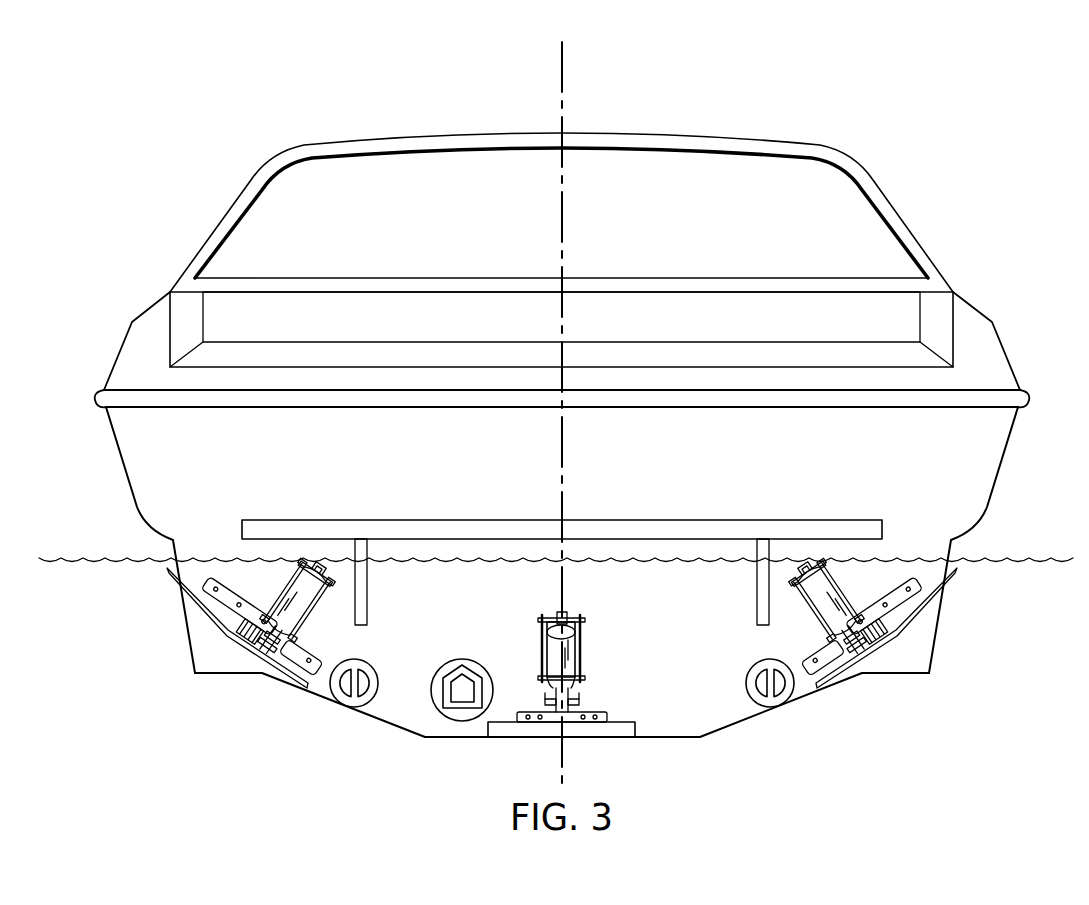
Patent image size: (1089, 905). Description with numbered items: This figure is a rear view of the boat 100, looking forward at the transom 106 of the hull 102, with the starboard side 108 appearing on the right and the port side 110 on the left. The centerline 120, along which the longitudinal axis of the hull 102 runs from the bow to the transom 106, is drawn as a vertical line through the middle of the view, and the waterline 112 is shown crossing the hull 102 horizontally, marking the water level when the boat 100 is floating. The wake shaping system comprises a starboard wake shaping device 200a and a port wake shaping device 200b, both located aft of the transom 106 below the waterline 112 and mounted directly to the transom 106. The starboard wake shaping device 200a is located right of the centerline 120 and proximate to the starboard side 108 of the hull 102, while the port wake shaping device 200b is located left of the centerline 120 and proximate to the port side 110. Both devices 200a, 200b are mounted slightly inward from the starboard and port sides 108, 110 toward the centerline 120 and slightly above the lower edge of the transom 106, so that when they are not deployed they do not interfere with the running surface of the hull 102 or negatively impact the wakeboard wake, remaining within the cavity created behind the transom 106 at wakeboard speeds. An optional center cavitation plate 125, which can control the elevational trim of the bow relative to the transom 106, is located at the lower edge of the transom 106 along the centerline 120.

The boat 100 is at (272, 80).
The hull 102 is at (668, 703).
The transom 106 is at (497, 432).
The starboard side 108 is at (1005, 452).
The port side 110 is at (125, 475).
The waterline 112 is at (1028, 560).
The centerline 120 is at (561, 57).
The center cavitation plate 125 is at (529, 730).
The starboard wake shaping device 200a is at (960, 637).
The port wake shaping device 200b is at (164, 637).